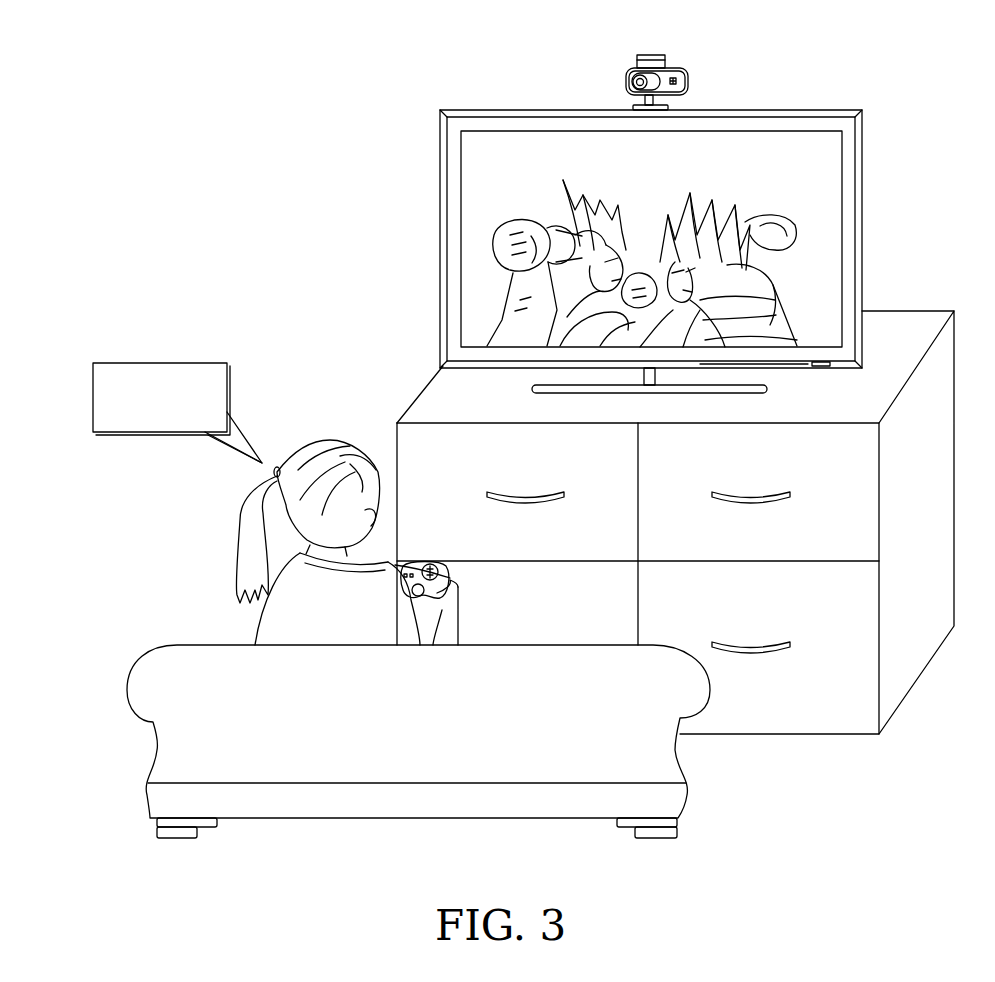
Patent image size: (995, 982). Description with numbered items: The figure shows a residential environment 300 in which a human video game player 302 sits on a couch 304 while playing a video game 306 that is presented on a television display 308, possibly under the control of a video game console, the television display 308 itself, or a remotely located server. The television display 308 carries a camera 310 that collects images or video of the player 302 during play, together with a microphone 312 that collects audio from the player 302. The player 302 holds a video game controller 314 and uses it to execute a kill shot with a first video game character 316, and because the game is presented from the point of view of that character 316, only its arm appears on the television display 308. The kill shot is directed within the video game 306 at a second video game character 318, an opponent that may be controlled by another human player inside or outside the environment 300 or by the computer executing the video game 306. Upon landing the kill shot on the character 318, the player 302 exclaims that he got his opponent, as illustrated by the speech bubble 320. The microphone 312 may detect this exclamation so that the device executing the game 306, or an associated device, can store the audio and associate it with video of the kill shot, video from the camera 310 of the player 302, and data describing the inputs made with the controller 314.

The residential environment 300 is at (258, 148).
The human video game player 302 is at (325, 435).
The couch 304 is at (140, 698).
The video game 306 is at (777, 143).
The television display 308 is at (440, 242).
The camera 310 is at (633, 82).
The microphone 312 is at (677, 77).
The video game controller 314 is at (442, 573).
The first video game character 316 is at (783, 217).
The second video game character 318 is at (530, 217).
The speech bubble 320 is at (158, 362).